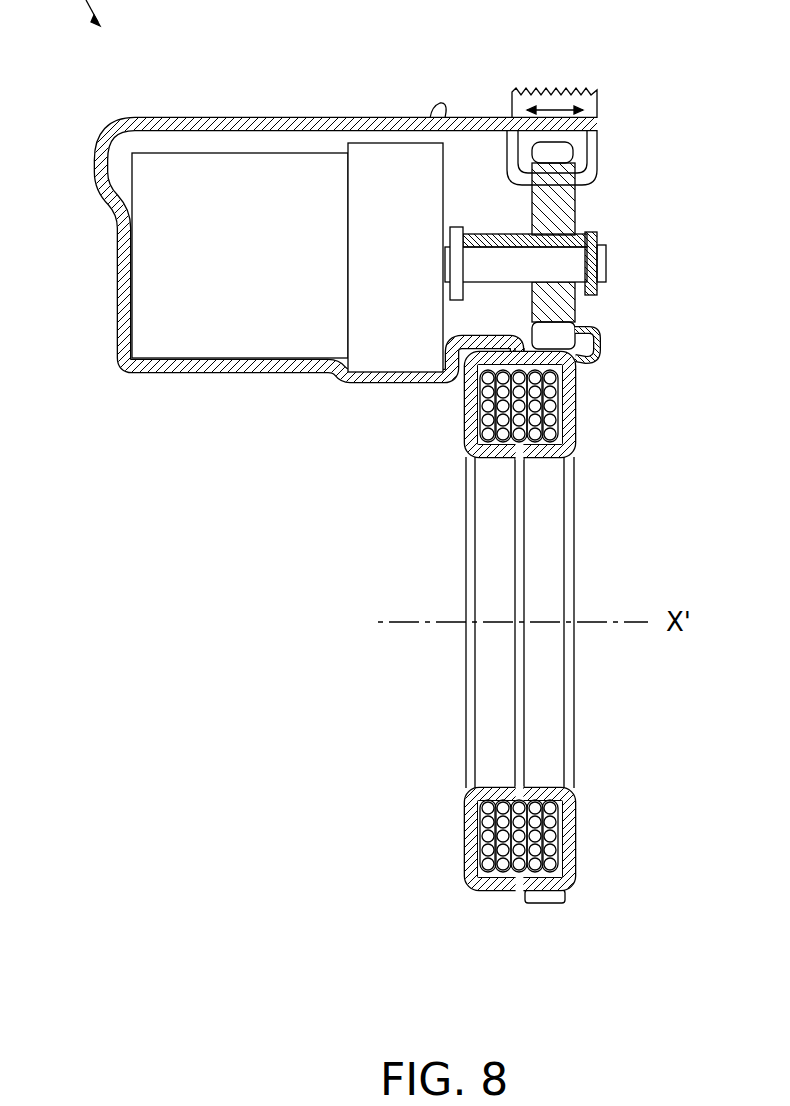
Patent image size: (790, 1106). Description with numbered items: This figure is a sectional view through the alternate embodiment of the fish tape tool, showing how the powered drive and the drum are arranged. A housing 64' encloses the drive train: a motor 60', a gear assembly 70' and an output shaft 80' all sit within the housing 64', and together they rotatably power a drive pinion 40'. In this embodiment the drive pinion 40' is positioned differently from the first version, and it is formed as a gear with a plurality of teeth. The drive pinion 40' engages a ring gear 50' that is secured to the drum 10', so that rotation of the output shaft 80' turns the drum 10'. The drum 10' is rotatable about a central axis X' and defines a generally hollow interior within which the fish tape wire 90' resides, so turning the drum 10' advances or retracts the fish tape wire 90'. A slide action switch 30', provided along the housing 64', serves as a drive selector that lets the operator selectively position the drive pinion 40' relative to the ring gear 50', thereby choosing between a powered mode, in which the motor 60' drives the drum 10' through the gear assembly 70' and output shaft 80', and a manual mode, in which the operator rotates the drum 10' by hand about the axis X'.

The housing 64' is at (349, 217).
The motor 60' is at (240, 212).
The gear assembly 70' is at (395, 219).
The output shaft 80' is at (525, 183).
The slide action switch 30' is at (554, 65).
The drive pinion 40' is at (621, 242).
The ring gear 50' is at (599, 655).
The fish tape wire 90' is at (565, 625).
The drum 10' is at (479, 619).